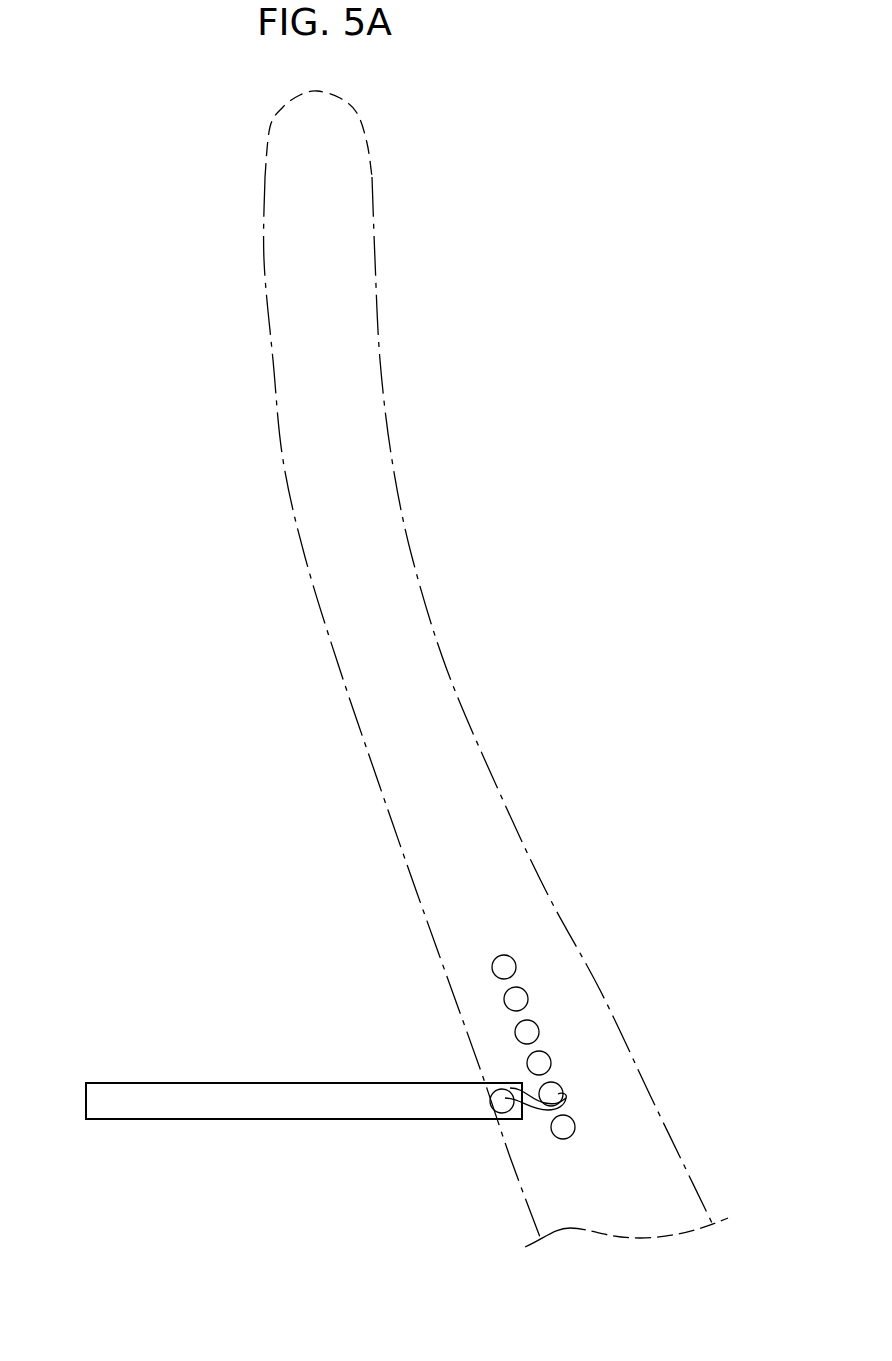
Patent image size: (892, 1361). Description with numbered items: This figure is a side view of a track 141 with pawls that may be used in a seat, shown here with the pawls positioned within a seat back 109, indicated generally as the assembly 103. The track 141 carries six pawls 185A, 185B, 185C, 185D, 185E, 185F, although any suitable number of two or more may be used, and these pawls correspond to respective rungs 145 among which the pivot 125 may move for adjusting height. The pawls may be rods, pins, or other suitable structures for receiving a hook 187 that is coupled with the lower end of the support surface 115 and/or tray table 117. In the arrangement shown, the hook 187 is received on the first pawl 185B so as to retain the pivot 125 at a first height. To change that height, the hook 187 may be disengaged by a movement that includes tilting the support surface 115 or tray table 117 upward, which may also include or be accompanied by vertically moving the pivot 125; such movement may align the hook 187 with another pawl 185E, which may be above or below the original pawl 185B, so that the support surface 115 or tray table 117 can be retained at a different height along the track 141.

The sleeve 103 is at (488, 664).
The seat back 109 is at (393, 513).
The support surface 115 is at (304, 1110).
The tray table 117 is at (172, 1120).
The pivot 125 is at (500, 1101).
The track 141 is at (625, 1262).
The rungs 145 is at (639, 1025).
The pawl 185A is at (637, 1120).
The first pawl 185B is at (562, 1092).
The pawl 185C is at (545, 1060).
The pawl 185D is at (533, 1028).
The another pawl 185E is at (522, 995).
The pawl 185F is at (512, 963).
The hook 187 is at (524, 1102).